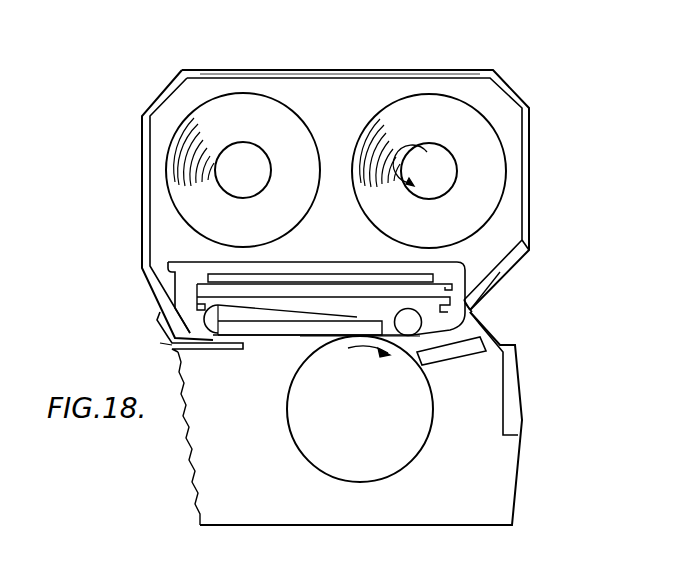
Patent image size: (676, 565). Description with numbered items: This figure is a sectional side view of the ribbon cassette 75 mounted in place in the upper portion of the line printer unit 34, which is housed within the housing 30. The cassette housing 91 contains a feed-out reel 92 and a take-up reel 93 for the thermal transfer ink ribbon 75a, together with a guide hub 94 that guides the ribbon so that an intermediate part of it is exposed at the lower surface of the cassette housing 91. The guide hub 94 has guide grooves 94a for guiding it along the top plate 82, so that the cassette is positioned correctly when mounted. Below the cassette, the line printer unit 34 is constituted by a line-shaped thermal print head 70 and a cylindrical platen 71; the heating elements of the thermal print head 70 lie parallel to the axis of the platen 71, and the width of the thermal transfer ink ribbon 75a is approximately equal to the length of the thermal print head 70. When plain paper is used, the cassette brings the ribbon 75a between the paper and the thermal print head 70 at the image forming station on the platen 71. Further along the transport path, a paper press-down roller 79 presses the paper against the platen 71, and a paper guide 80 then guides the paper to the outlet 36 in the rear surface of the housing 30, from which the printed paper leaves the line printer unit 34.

The housing 30 is at (498, 495).
The line printer unit 34 is at (190, 447).
The outlet 36 is at (503, 322).
The thermal print head 70 is at (345, 330).
The platen 71 is at (327, 460).
The ribbon cassette 75 is at (451, 68).
The thermal transfer ink ribbon 75a is at (520, 247).
The paper press-down roller 79 is at (408, 335).
The paper guide 80 is at (462, 352).
The top plate 82 is at (280, 292).
The cassette housing 91 is at (355, 70).
The feed-out reel 92 is at (246, 160).
The take-up reel 93 is at (443, 182).
The guide hub 94 is at (168, 262).
The guide grooves 94a is at (197, 294).